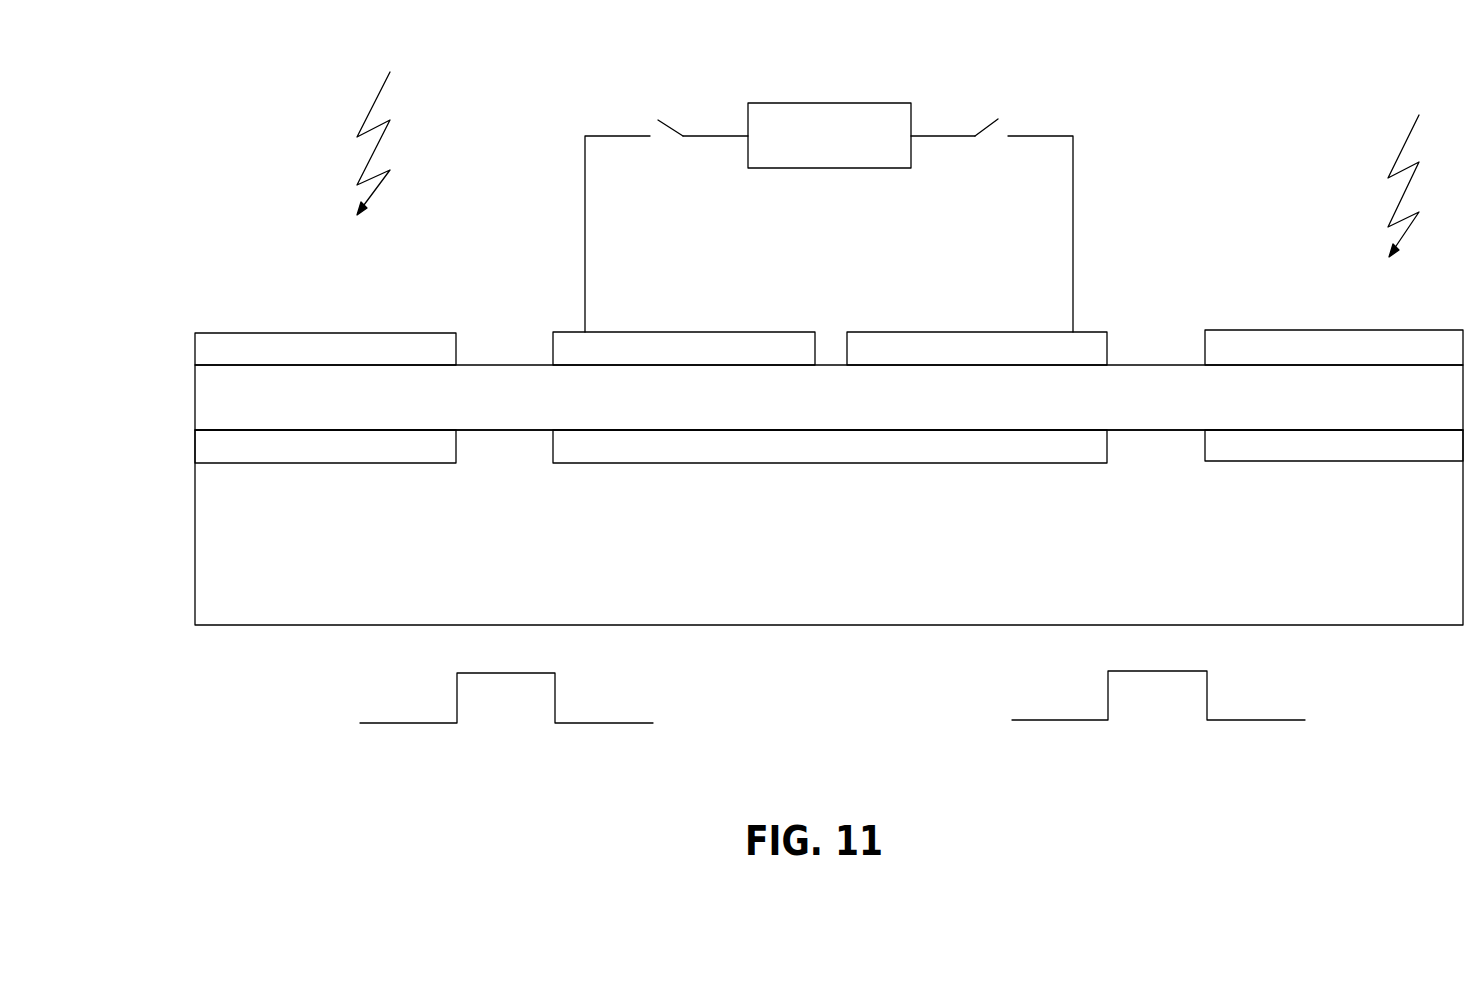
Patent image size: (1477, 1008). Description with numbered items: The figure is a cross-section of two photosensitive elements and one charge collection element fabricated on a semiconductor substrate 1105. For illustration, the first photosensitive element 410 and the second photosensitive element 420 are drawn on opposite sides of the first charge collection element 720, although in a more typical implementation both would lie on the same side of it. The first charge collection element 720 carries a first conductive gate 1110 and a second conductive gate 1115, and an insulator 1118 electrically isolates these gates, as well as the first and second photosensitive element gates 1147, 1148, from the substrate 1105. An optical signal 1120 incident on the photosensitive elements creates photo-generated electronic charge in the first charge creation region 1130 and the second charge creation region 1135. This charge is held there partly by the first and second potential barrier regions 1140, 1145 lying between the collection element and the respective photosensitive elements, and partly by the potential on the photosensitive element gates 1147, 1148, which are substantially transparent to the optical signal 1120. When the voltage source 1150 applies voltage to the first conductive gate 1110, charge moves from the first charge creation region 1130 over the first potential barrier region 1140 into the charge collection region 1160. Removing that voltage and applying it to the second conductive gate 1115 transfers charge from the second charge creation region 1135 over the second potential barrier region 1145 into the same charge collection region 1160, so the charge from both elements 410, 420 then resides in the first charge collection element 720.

The first photosensitive element 410 is at (325, 298).
The second photosensitive element 420 is at (1287, 297).
The first charge collection element 720 is at (830, 250).
The semiconductor substrate 1105 is at (897, 562).
The first conductive gate 1110 is at (637, 332).
The second conductive gate 1115 is at (1023, 330).
The insulator 1118 is at (390, 406).
The optical signal 1120 is at (325, 142).
The first charge creation region 1130 is at (261, 447).
The second charge creation region 1135 is at (1423, 443).
The first potential barrier region 1140 is at (507, 755).
The second potential barrier region 1145 is at (1158, 753).
The first photosensitive element gate 1147 is at (390, 322).
The second photosensitive element gate 1148 is at (1335, 330).
The voltage source 1150 is at (812, 103).
The charge collection region 1160 is at (720, 447).